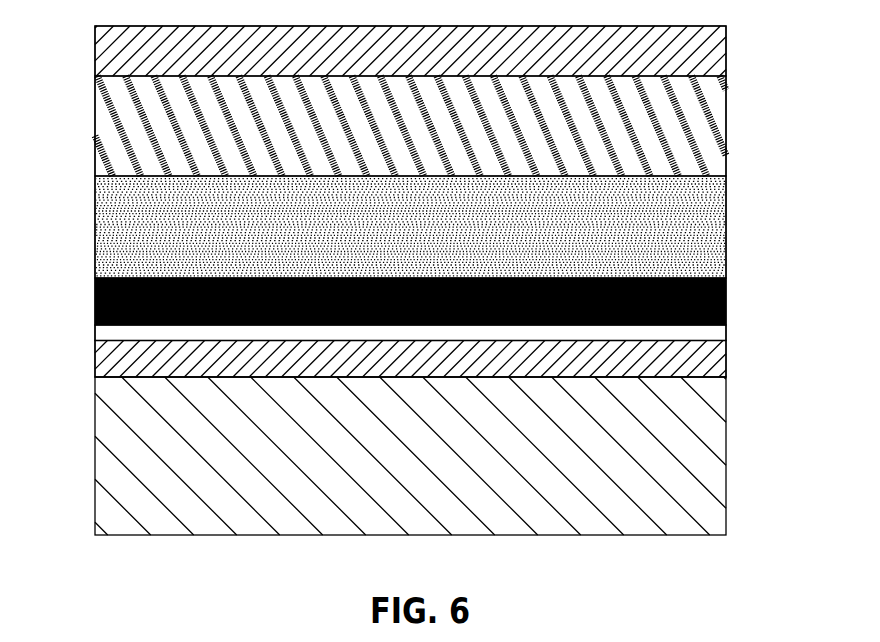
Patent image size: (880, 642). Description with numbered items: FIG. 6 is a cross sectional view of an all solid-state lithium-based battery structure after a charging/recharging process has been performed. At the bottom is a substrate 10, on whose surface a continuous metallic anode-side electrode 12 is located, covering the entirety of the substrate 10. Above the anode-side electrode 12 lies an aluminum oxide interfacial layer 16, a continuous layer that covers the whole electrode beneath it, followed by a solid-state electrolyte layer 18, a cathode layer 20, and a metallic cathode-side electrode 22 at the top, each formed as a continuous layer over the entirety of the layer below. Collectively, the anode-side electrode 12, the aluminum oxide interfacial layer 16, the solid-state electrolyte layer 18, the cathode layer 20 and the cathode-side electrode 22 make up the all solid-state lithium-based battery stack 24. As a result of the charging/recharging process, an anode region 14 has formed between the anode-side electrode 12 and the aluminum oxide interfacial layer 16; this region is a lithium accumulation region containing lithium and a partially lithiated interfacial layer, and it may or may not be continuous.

The substrate 10 is at (430, 462).
The anode-side electrode 12 is at (715, 360).
The anode region 14 is at (715, 332).
The aluminum oxide interfacial layer 16 is at (430, 314).
The solid-state electrolyte layer 18 is at (430, 234).
The cathode layer 20 is at (430, 133).
The cathode-side electrode 22 is at (430, 62).
The all solid-state lithium-based battery stack 24 is at (85, 26).